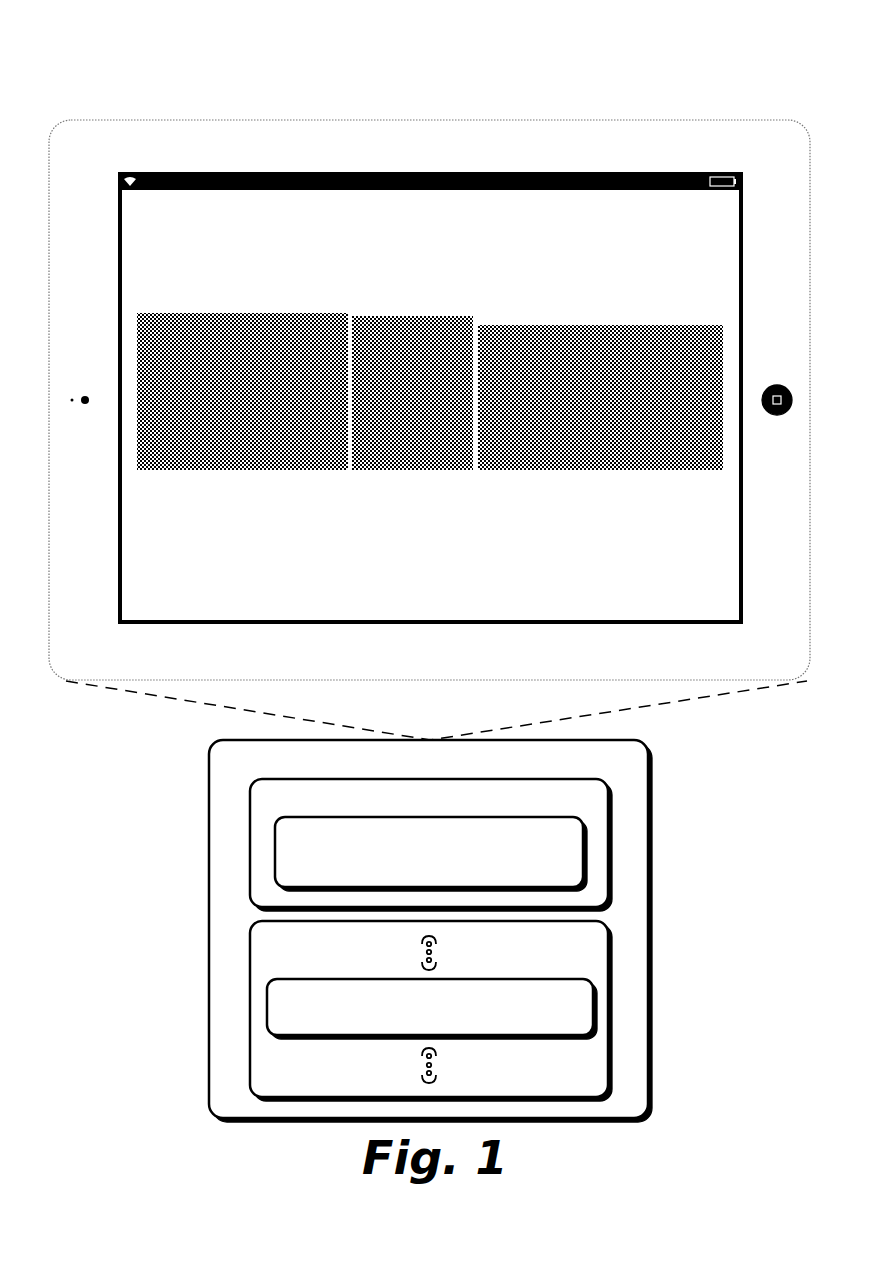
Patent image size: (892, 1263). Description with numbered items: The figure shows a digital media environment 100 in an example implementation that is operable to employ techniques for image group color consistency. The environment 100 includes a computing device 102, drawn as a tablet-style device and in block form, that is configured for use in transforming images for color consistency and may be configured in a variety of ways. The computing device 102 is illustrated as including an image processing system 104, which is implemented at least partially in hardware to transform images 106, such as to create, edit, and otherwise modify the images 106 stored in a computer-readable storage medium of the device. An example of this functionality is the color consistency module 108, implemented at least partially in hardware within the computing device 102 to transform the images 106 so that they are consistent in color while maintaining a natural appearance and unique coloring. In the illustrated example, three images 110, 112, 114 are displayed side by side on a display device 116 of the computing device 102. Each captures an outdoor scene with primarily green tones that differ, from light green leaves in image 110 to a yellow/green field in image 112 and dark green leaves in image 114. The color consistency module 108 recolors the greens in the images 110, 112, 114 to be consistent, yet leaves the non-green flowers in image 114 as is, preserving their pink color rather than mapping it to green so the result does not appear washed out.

The digital media environment 100 is at (144, 56).
The computing device 102 is at (430, 931).
The image processing system 104 is at (431, 845).
The images 106 is at (432, 1009).
The color consistency module 108 is at (431, 854).
The image 110 is at (243, 313).
The image 112 is at (407, 318).
The image 114 is at (595, 325).
The display device 116 is at (419, 173).